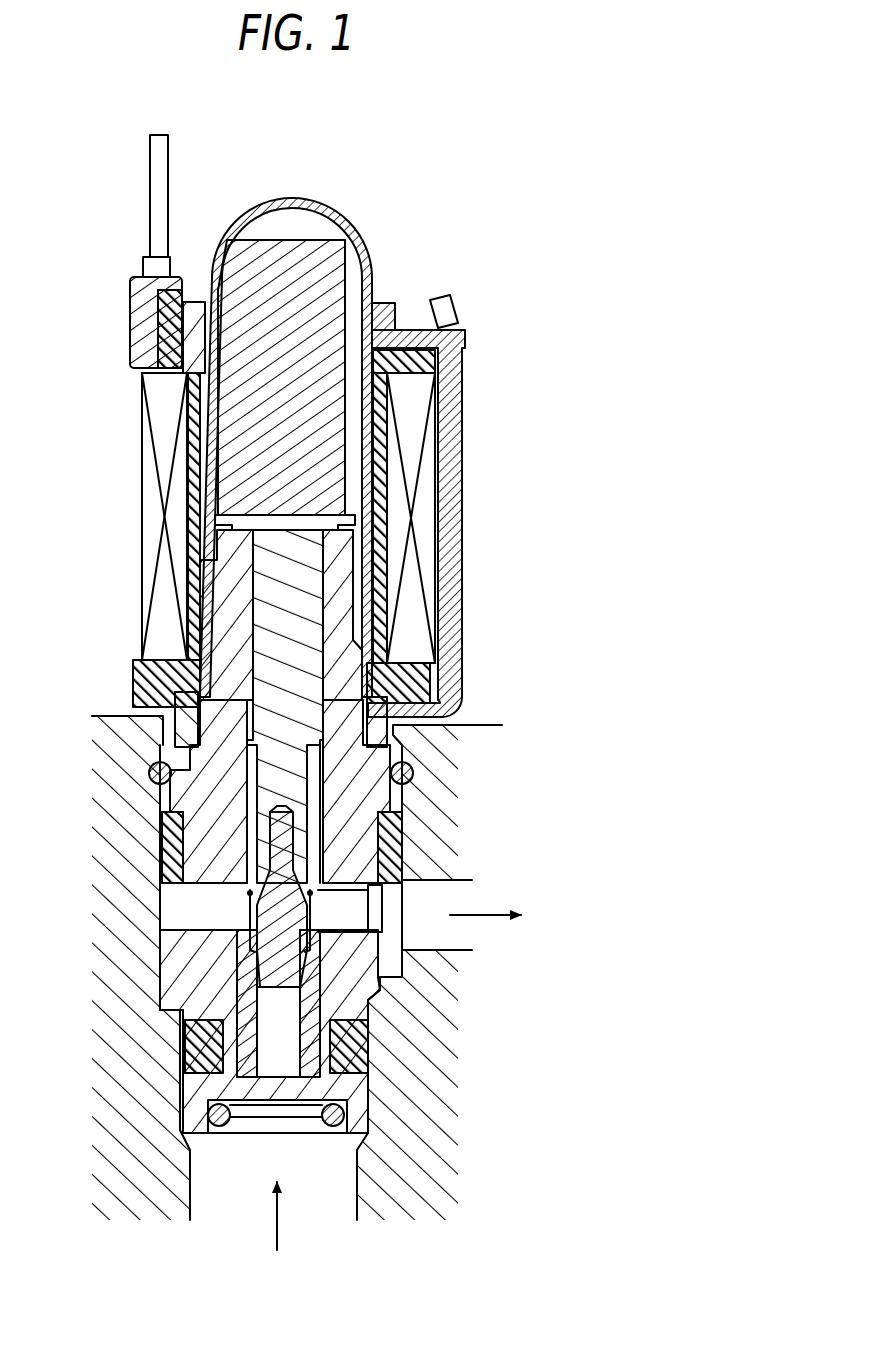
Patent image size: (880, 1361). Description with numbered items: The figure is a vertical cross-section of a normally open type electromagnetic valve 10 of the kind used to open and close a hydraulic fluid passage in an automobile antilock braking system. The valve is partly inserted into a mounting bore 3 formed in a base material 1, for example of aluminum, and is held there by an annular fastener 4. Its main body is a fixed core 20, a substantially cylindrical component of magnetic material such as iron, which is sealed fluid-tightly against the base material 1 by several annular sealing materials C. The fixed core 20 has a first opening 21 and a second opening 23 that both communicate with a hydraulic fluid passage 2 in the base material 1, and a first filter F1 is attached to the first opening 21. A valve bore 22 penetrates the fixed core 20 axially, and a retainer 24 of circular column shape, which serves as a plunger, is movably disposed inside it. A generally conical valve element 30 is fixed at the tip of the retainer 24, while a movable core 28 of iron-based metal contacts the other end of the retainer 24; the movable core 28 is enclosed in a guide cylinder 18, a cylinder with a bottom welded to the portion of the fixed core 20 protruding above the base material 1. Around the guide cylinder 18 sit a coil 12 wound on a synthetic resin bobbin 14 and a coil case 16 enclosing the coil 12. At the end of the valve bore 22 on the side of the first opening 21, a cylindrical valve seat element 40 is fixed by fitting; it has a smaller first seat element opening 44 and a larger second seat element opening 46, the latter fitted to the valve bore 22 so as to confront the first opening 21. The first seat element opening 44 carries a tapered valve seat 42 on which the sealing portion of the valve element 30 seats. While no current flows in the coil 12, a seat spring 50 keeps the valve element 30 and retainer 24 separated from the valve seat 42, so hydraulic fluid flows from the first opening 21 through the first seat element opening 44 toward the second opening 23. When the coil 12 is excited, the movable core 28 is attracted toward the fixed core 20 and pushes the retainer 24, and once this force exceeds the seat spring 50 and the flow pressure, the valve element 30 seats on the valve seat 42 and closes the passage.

The base material 1 is at (450, 768).
The hydraulic fluid passage 2 is at (437, 943).
The mounting bore 3 is at (178, 718).
The annular fastener 4 is at (150, 772).
The normally open type electromagnetic valve 10 is at (398, 206).
The coil 12 is at (418, 440).
The bobbin 14 is at (385, 497).
The coil case 16 is at (462, 362).
The guide cylinder 18 is at (373, 250).
The fixed core 20 is at (345, 608).
The first opening 21 is at (250, 1143).
The valve bore 22 is at (250, 660).
The second opening 23 is at (342, 900).
The retainer 24 is at (293, 712).
The movable core 28 is at (230, 265).
The valve element 30 is at (338, 912).
The valve seat element 40 is at (240, 1020).
The valve seat 42 is at (262, 935).
The first seat element opening 44 is at (290, 980).
The second seat element opening 46 is at (303, 1133).
The seat spring 50 is at (350, 865).
The annular sealing materials C is at (163, 845).
The first filter F1 is at (218, 1135).